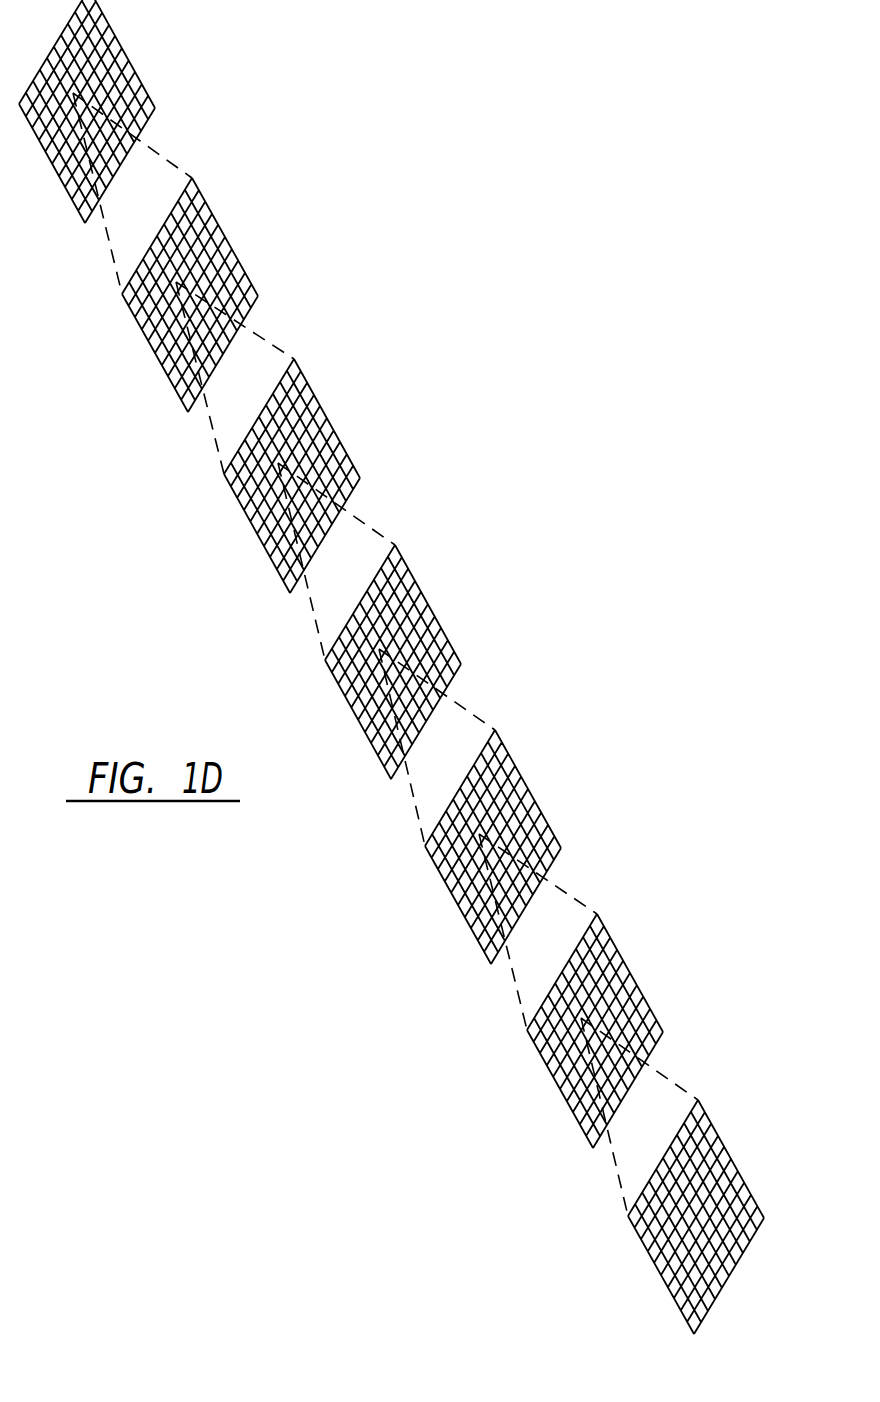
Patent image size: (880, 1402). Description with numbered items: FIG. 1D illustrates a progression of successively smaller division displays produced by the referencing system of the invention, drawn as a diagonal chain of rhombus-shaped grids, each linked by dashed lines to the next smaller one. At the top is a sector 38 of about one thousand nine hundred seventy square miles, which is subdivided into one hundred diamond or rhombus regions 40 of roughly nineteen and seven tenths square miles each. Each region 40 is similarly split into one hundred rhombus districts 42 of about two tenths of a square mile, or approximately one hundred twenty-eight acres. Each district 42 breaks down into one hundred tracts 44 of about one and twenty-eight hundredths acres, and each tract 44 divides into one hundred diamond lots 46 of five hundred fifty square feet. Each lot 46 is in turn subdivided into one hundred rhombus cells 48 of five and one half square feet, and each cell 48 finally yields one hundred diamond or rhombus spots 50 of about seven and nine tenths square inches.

The sector 38 is at (133, 67).
The region 40 is at (236, 256).
The district 42 is at (336, 438).
The tract 44 is at (437, 624).
The lot 46 is at (536, 800).
The cell 48 is at (638, 988).
The spot 50 is at (733, 1160).